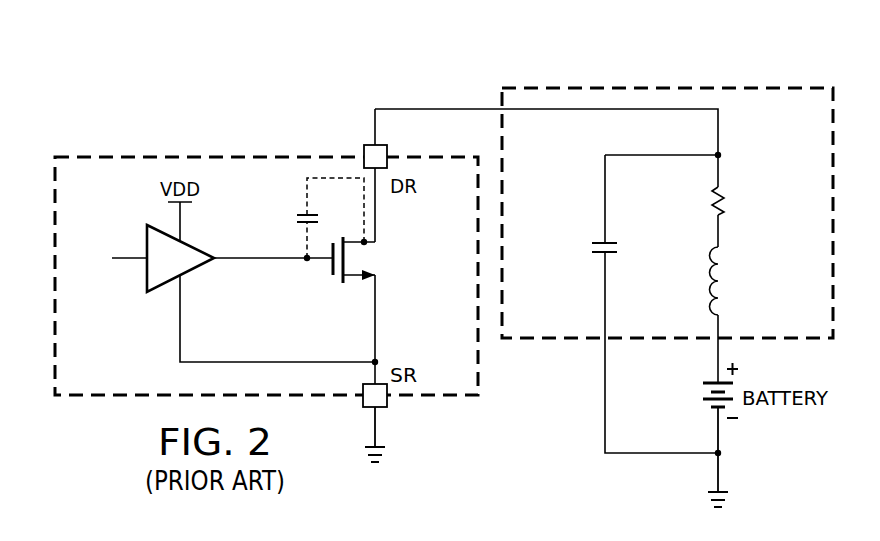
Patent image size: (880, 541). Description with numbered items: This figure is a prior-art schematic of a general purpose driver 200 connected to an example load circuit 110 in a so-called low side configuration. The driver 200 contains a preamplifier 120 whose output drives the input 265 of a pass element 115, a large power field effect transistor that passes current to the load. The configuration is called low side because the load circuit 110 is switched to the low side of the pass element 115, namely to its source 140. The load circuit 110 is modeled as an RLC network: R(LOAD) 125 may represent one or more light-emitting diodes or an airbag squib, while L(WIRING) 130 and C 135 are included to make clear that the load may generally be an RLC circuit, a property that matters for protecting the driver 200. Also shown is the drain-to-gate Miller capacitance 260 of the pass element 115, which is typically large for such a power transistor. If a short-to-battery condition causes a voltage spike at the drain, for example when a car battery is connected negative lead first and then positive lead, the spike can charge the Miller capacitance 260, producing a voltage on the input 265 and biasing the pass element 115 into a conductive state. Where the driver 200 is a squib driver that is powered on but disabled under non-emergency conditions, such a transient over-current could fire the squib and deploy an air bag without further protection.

The load circuit 110 is at (778, 87).
The pass element 115 is at (331, 268).
The preamplifier 120 is at (144, 270).
The R(LOAD) 125 is at (713, 198).
The L(WIRING) 130 is at (701, 288).
The C 135 is at (592, 248).
The source 140 is at (377, 292).
The general purpose driver 200 is at (110, 150).
The drain-to-gate Miller capacitance 260 is at (296, 218).
The input 265 is at (259, 262).